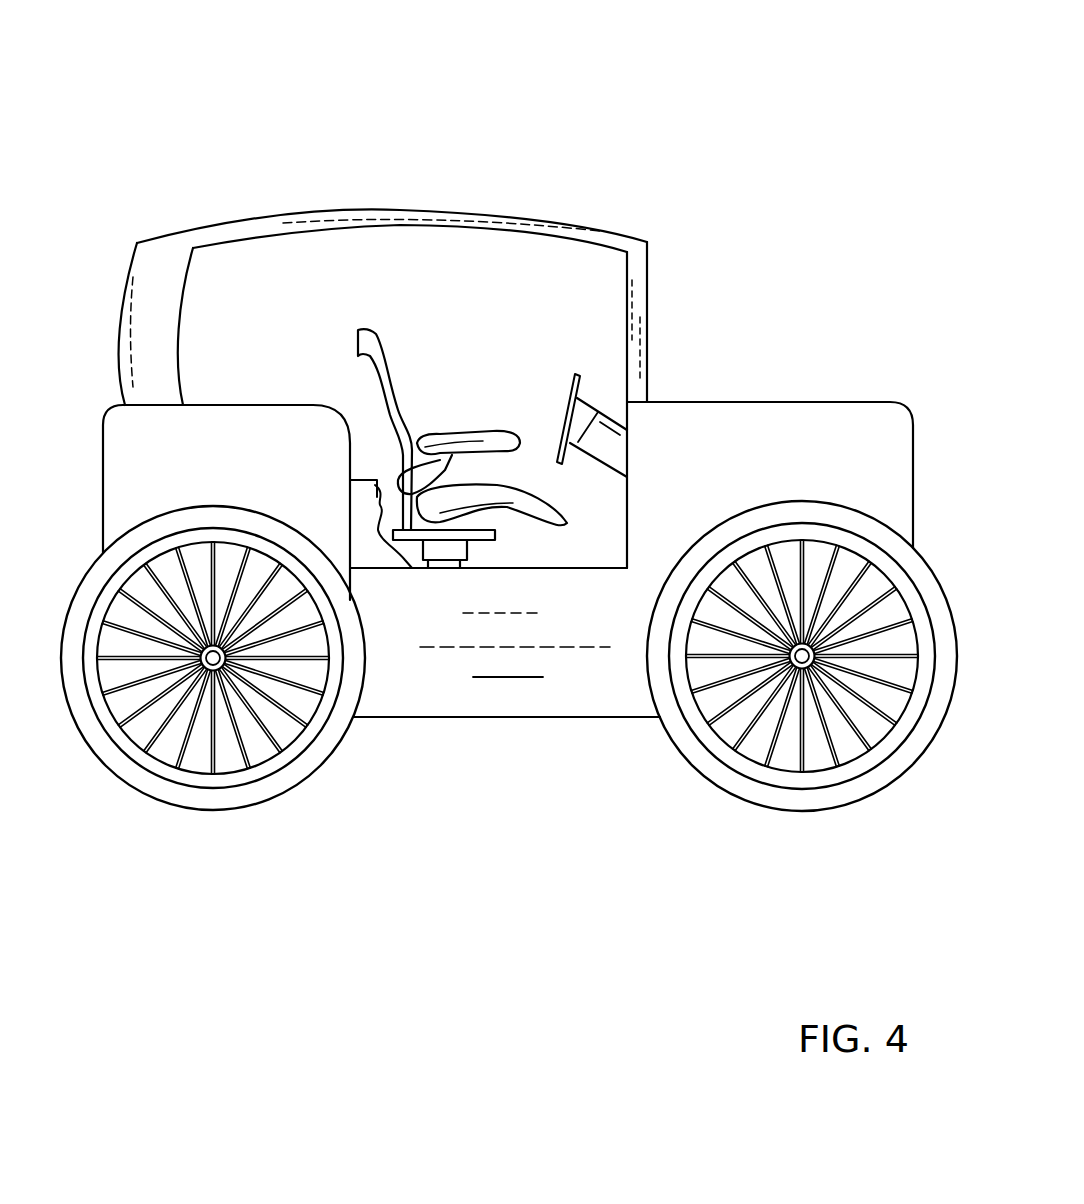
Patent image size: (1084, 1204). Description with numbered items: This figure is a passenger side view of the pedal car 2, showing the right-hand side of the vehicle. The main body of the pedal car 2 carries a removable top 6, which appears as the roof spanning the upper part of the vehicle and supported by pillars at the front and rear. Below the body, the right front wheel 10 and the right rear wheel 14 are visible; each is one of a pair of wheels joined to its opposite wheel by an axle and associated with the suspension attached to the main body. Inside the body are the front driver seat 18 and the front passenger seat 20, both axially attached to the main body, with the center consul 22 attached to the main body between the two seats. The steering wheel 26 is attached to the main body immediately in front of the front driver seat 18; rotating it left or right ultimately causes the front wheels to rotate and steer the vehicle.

The pedal car 2 is at (704, 97).
The removable top 6 is at (314, 212).
The right front wheel 10 is at (799, 813).
The right rear wheel 14 is at (173, 813).
The front driver seat 18 is at (463, 450).
The front passenger seat 20 is at (478, 765).
The center consul 22 is at (375, 553).
The steering wheel 26 is at (580, 386).